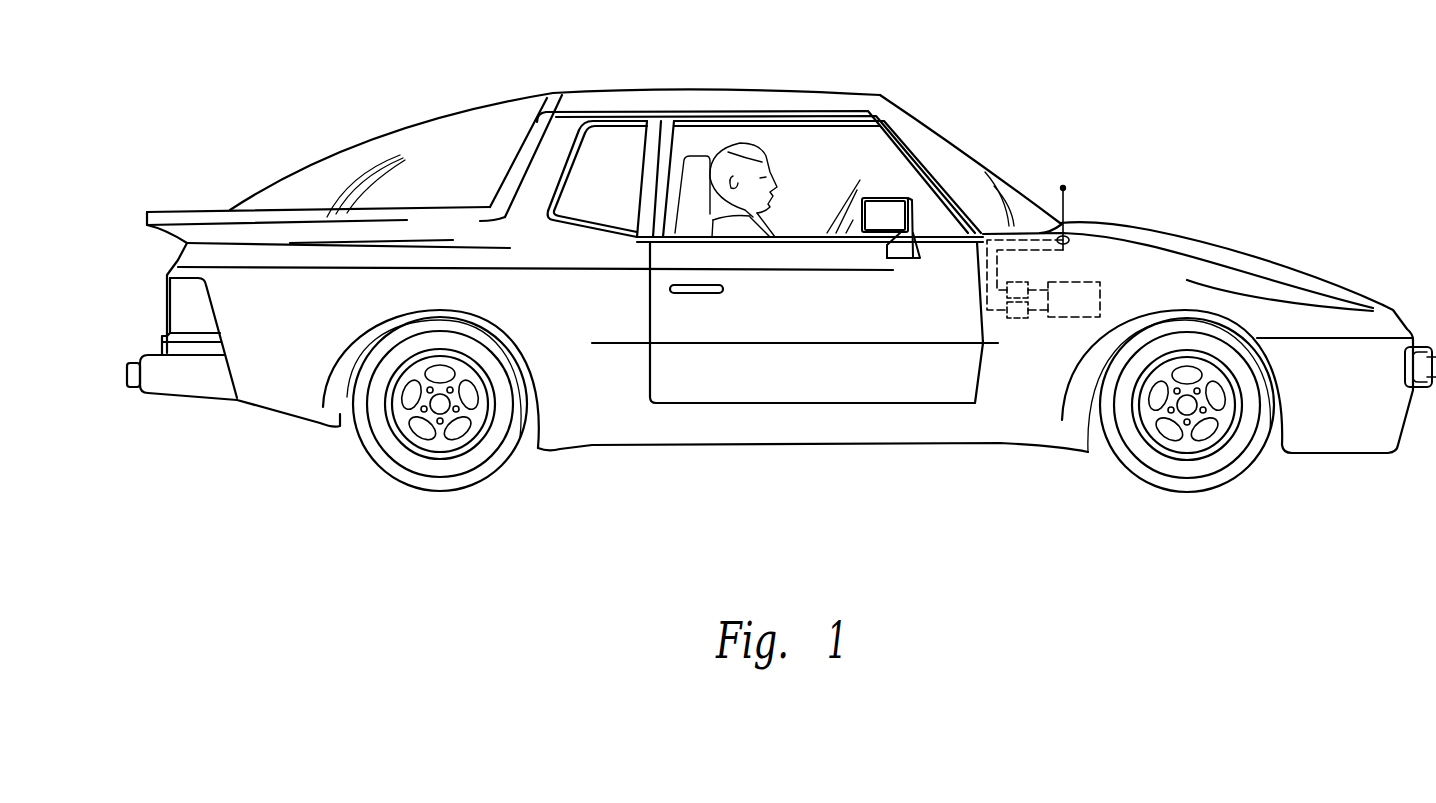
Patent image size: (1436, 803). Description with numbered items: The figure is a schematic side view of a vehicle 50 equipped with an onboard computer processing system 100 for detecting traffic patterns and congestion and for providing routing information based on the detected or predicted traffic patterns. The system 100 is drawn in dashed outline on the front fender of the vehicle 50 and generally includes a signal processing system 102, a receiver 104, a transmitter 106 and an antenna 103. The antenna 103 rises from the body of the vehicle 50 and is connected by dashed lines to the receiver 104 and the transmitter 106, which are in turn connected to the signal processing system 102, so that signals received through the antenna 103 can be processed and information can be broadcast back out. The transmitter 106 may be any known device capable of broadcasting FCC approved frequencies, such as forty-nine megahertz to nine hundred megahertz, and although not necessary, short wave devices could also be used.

The vehicle 50 is at (733, 88).
The onboard computer processing system 100 is at (1152, 108).
The signal processing system 102 is at (1100, 295).
The antenna 103 is at (1067, 203).
The receiver 104 is at (1022, 282).
The transmitter 106 is at (1023, 318).